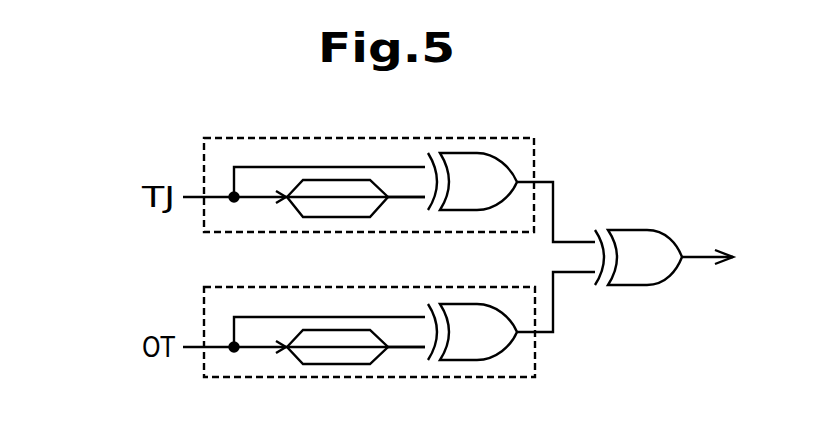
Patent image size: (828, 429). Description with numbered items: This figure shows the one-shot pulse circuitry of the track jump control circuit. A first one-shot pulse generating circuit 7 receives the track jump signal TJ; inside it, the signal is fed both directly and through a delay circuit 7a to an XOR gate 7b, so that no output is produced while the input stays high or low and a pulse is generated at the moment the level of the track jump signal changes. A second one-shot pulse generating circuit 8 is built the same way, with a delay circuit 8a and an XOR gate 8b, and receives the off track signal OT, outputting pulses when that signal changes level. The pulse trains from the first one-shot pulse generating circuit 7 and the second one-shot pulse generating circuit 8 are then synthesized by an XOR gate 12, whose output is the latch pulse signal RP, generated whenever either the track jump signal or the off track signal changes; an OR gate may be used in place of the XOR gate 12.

The first one-shot pulse generating circuit 7 is at (383, 205).
The delay circuit 7a is at (350, 217).
The XOR gate 7b is at (490, 210).
The second one-shot pulse generating circuit 8 is at (383, 354).
The delay circuit 8a is at (350, 364).
The XOR gate 8b is at (492, 360).
The XOR gate 12 is at (657, 231).